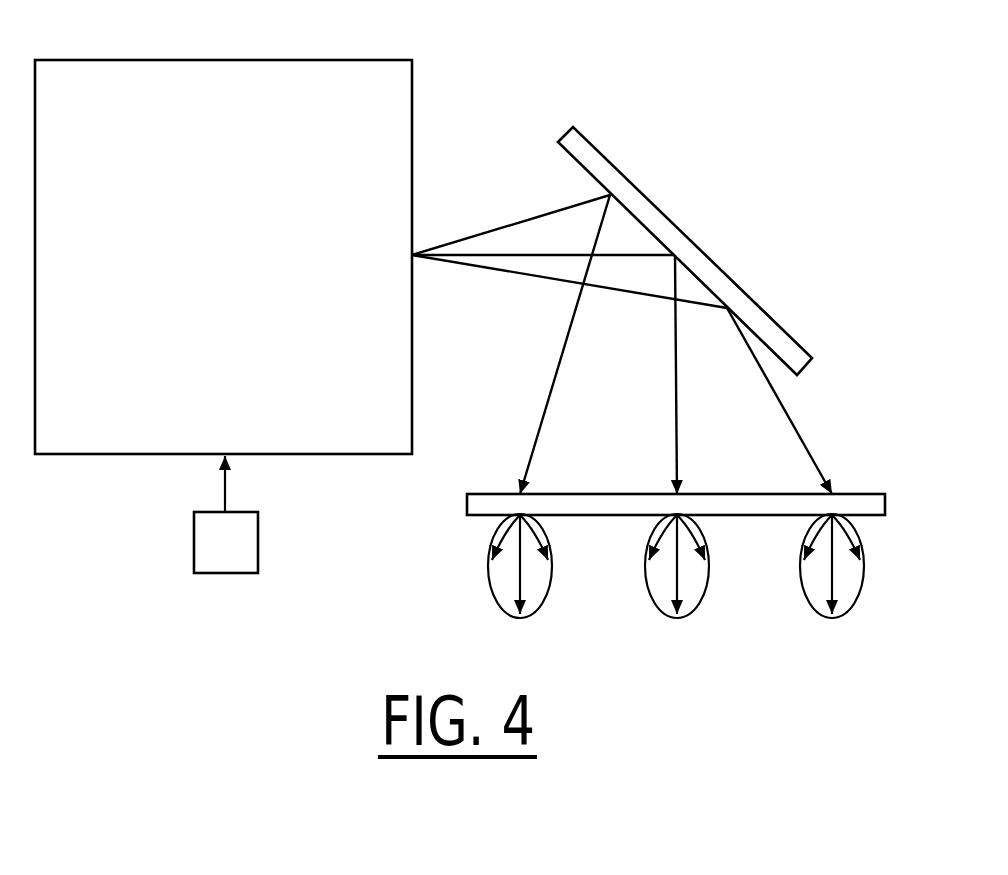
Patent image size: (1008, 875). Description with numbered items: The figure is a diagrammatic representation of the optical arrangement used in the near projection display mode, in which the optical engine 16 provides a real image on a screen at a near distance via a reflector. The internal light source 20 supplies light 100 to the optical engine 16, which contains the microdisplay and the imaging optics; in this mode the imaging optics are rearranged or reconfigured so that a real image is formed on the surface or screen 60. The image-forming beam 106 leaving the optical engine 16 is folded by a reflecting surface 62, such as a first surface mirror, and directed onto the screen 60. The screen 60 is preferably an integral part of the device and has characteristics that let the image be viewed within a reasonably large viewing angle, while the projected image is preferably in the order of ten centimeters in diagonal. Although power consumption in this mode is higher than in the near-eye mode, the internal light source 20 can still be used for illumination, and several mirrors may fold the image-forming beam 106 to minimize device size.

The optical engine 16 is at (220, 60).
The internal light source 20 is at (194, 540).
The light 100 is at (225, 490).
The image-forming beam 106 is at (474, 202).
The reflecting surface 62 is at (637, 188).
The screen 60 is at (467, 505).